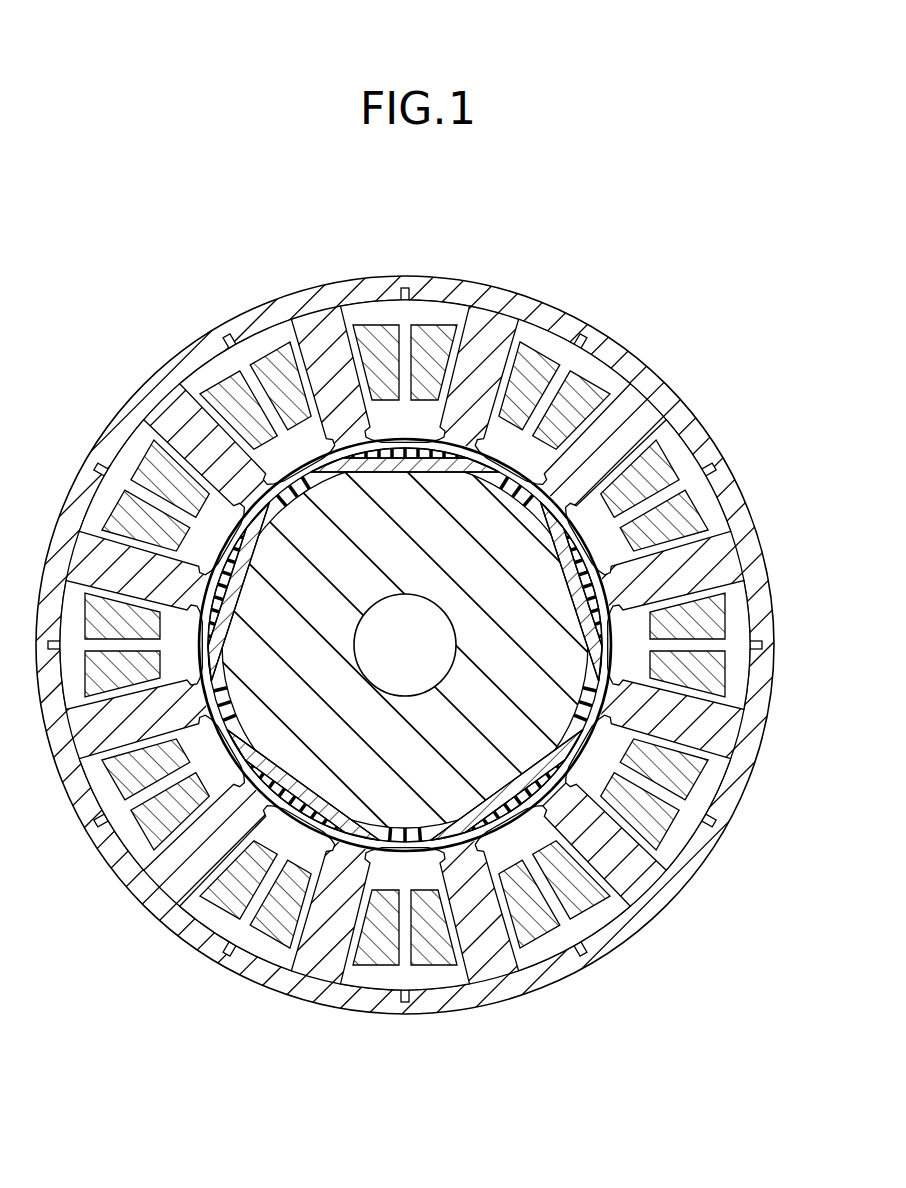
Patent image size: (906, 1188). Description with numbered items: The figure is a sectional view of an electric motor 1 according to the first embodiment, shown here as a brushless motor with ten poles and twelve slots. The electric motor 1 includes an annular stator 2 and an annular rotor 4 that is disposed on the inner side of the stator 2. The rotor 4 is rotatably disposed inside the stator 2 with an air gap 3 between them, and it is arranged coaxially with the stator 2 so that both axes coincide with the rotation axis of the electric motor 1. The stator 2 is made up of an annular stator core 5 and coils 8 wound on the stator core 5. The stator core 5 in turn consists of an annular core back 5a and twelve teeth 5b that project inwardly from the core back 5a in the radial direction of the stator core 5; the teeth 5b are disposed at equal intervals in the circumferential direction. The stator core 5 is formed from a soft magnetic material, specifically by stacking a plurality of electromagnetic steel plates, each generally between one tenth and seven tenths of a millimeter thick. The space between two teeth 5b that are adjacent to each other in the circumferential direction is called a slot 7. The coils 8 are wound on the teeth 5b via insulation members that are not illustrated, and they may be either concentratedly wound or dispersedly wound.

The electric motor 1 is at (678, 277).
The stator 2 is at (500, 304).
The air gap 3 is at (597, 553).
The rotor 4 is at (453, 615).
The stator core 5 is at (453, 611).
The core back 5a is at (188, 365).
The teeth 5b is at (180, 430).
The slot 7 is at (355, 316).
The coils 8 is at (430, 338).